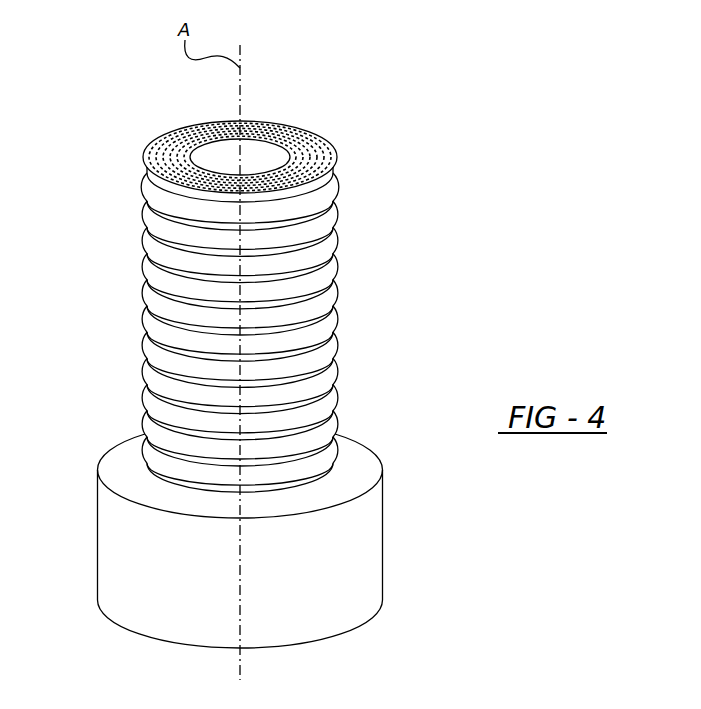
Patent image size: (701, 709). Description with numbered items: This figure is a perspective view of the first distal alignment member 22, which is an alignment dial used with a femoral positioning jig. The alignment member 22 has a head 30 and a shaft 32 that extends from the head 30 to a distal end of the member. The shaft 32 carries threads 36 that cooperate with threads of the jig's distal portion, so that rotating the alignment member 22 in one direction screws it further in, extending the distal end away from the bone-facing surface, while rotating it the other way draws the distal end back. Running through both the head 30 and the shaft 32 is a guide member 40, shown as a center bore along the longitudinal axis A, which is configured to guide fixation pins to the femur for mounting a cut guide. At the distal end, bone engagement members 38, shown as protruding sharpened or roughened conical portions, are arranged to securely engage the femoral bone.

The first distal alignment member 22 is at (91, 229).
The head 30 is at (347, 557).
The shaft 32 is at (305, 220).
The threads 36 is at (325, 343).
The bone engagement members 38 is at (327, 143).
The guide member 40 is at (263, 155).